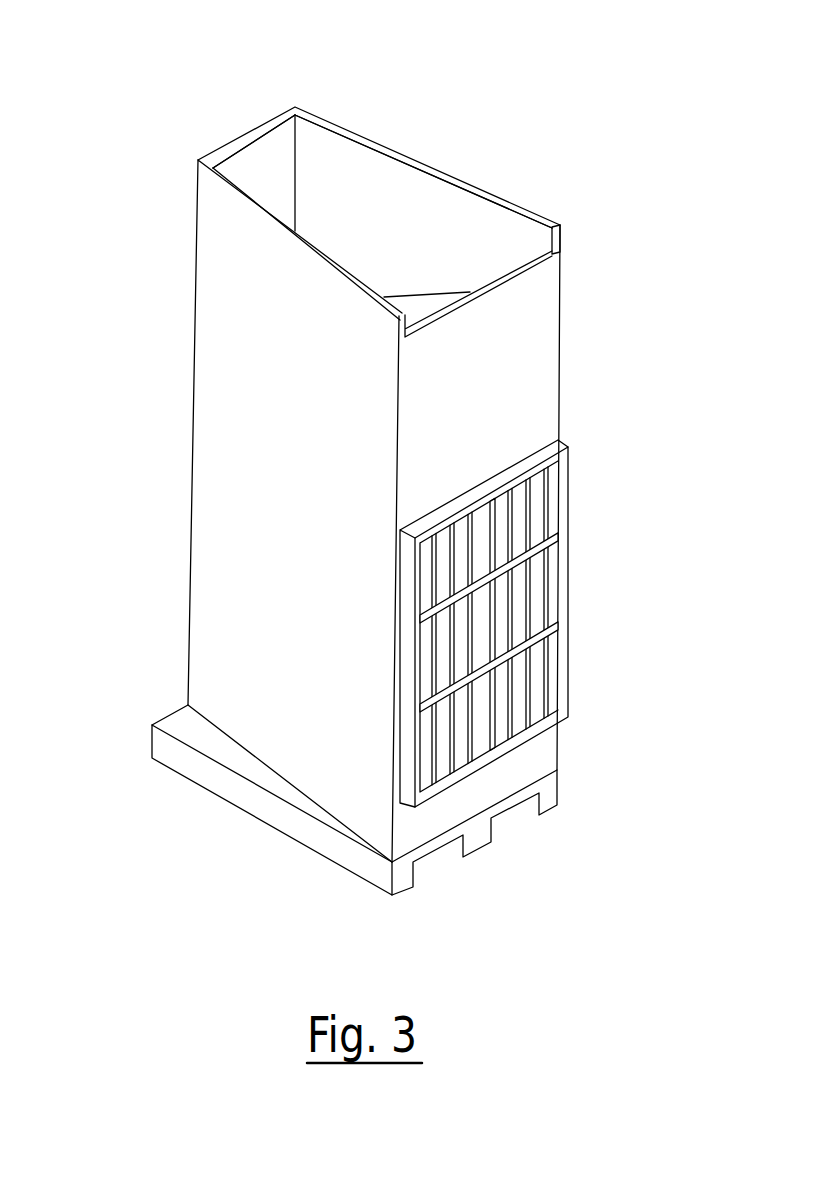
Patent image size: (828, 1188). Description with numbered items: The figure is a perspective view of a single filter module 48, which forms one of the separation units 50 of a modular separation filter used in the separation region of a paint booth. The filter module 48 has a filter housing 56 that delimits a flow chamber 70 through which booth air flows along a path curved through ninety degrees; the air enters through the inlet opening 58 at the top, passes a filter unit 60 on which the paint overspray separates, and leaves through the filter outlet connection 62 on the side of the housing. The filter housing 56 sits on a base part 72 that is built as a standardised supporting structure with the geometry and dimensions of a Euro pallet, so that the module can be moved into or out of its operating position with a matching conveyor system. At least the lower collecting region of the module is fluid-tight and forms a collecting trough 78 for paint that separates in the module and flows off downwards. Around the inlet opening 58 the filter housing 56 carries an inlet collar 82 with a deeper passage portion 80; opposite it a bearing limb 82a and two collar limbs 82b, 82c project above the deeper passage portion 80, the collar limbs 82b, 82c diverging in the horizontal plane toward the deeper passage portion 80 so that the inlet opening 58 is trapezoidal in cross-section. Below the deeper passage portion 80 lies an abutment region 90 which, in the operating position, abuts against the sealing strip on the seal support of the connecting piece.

The filter module 48 is at (237, 377).
The separation unit 50 is at (212, 477).
The filter housing 56 is at (579, 380).
The inlet opening 58 is at (410, 190).
The filter unit 60 is at (437, 303).
The filter outlet connection 62 is at (565, 593).
The flow chamber 70 is at (340, 227).
The base part 72 is at (293, 832).
The collecting trough 78 is at (262, 720).
The deeper passage portion 80 is at (550, 255).
The inlet collar 82 is at (348, 120).
The bearing limb 82a is at (270, 152).
The collar limb 82b is at (257, 226).
The collar limb 82c is at (458, 200).
The abutment region 90 is at (497, 298).